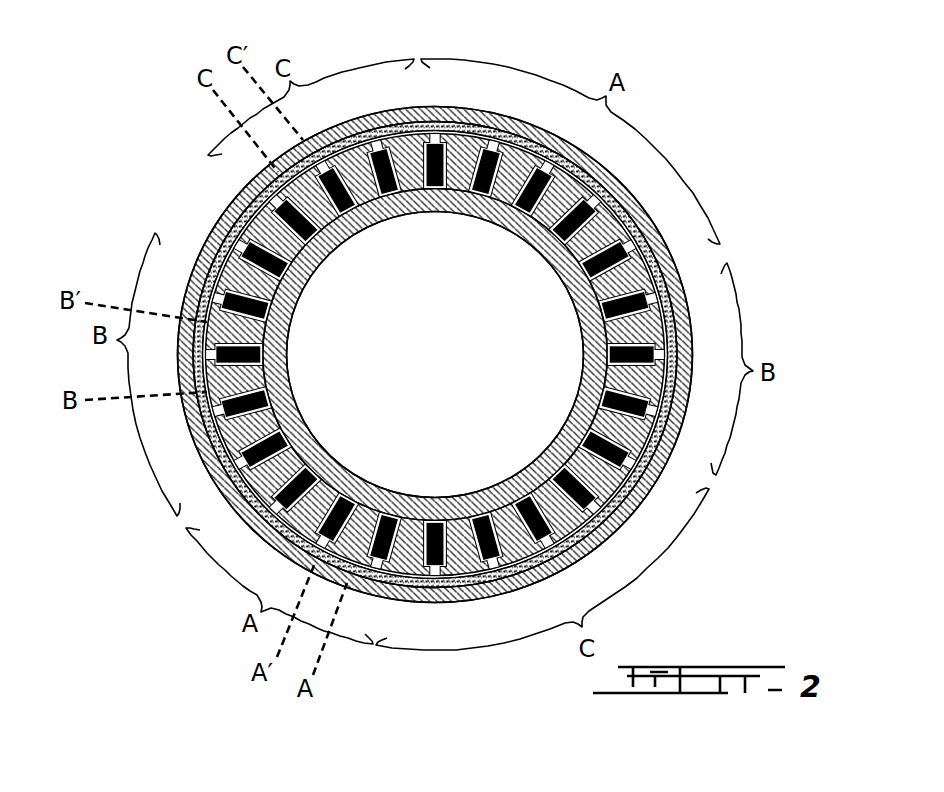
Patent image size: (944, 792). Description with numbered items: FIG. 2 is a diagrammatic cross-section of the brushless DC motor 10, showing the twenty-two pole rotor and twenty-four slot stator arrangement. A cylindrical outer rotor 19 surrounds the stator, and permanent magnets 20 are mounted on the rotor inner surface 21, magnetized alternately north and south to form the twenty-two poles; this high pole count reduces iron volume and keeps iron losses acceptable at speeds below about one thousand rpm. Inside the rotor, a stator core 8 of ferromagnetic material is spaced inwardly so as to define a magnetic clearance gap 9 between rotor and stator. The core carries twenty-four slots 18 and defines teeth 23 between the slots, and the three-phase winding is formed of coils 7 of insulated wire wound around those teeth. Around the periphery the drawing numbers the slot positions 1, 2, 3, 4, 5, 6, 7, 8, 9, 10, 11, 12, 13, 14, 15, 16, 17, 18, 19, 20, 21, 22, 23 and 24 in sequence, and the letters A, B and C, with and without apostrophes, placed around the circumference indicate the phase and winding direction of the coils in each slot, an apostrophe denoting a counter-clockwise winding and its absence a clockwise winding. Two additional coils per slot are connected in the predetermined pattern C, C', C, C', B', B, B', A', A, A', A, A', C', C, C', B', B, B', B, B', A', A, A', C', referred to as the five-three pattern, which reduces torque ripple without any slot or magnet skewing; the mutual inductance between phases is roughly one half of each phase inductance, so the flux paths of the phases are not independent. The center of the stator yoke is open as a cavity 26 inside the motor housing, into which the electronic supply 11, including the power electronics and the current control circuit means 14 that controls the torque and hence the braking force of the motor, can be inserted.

The slot 1 is at (373, 569).
The slot 2 is at (432, 579).
The slot 3 is at (487, 571).
The slot 4 is at (540, 551).
The slot 5 is at (589, 516).
The slot 6 is at (626, 471).
The coils 7 is at (652, 418).
The stator core 8 is at (297, 262).
The magnetic clearance gap 9 is at (85, 260).
The motor 10 is at (637, 249).
The electronic supply 11 is at (601, 202).
The slot 12 is at (552, 165).
The slot 13 is at (501, 140).
The current control circuit means 14 is at (444, 131).
The slot 15 is at (381, 137).
The slot 16 is at (323, 158).
The outer frame ring / slot 17 is at (592, 40).
The slots 18 is at (708, 147).
The cylindrical outer rotor 19 is at (786, 418).
The permanent magnets 20 is at (365, 38).
The rotor inner surface 21 is at (770, 282).
The slot 22 is at (232, 460).
The teeth 23 is at (267, 508).
The slot 24 is at (314, 545).
The cavity 26 is at (414, 366).